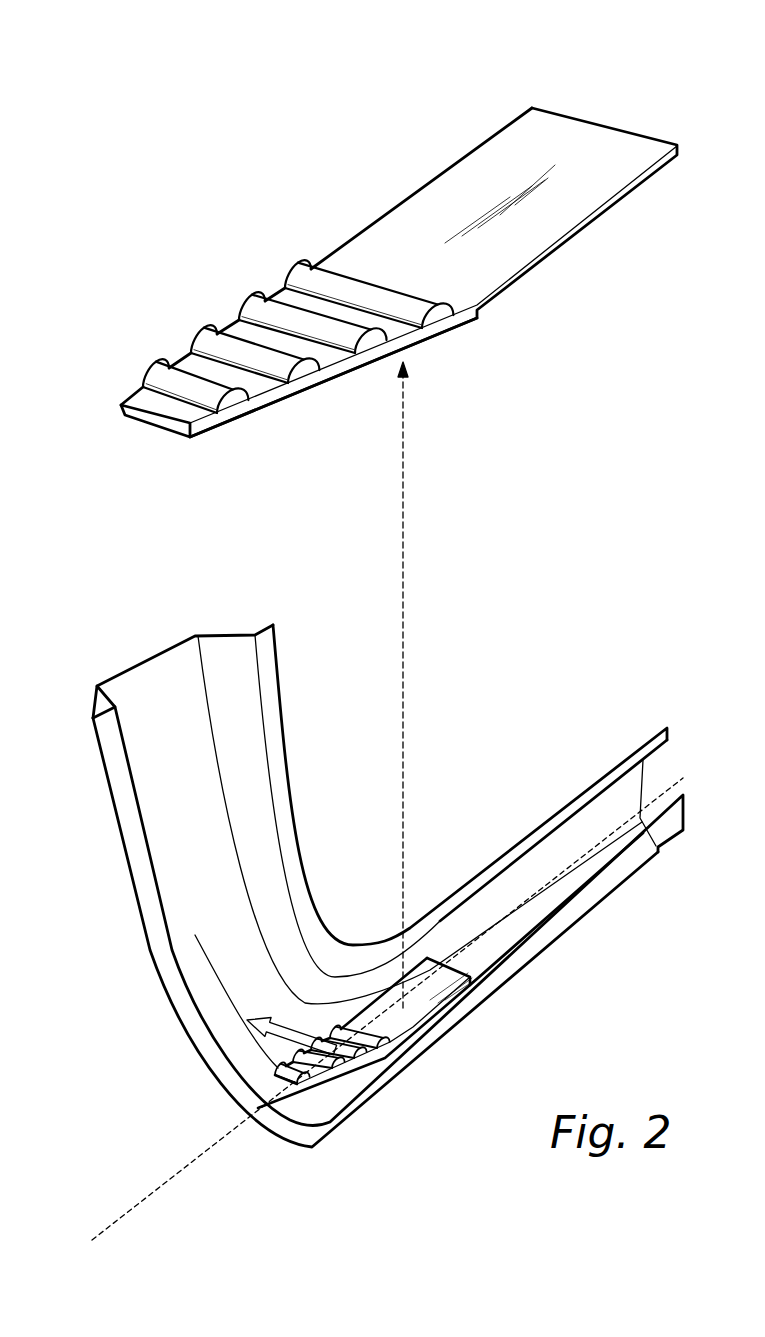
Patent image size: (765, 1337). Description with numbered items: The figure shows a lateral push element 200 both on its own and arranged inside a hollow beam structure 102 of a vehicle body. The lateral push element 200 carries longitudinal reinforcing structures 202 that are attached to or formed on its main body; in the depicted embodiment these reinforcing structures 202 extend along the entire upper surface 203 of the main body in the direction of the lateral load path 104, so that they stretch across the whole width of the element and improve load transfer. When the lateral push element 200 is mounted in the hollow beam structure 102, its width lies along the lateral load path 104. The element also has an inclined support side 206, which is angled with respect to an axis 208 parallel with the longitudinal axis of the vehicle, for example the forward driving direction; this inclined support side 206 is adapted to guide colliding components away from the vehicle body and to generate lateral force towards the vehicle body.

The hollow beam structure 102 is at (550, 930).
The lateral load path 104 is at (278, 1023).
The lateral push element 200 is at (452, 105).
The reinforcing structures 202 is at (160, 368).
The upper surface 203 is at (418, 230).
The inclined support side 206 is at (350, 380).
The axis 208 is at (132, 1208).